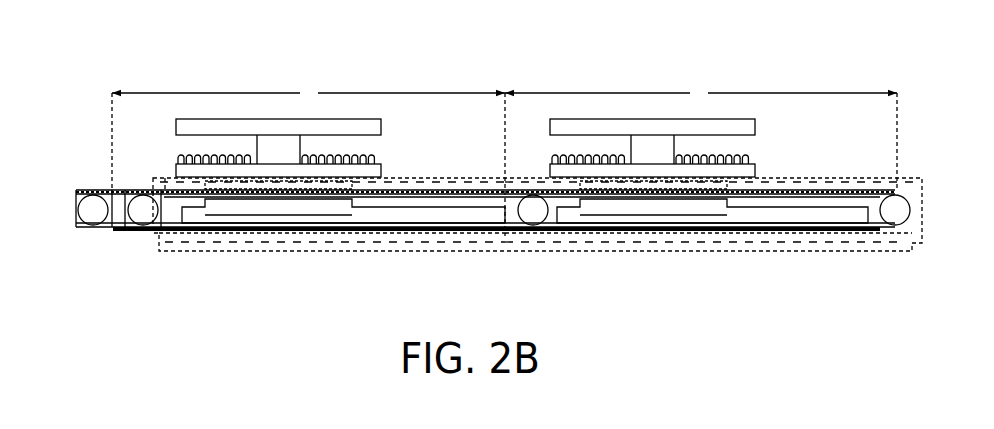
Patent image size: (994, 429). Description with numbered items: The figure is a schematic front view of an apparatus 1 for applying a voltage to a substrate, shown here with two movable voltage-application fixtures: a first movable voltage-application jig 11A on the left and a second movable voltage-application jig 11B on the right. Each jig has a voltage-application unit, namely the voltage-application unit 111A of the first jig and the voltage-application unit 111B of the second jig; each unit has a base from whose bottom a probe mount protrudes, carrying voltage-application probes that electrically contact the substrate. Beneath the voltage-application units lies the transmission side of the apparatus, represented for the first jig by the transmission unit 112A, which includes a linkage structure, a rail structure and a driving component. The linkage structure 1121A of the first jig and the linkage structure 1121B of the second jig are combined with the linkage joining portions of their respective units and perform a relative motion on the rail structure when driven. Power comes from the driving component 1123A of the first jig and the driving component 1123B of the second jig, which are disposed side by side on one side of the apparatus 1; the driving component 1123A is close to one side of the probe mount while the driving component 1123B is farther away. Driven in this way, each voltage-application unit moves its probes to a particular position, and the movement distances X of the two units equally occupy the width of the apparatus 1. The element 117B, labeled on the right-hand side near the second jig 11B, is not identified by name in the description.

The apparatus for applying a voltage to a substrate 1 is at (127, 50).
The first movable voltage-application jig 11A is at (264, 144).
The second movable voltage-application jig 11B is at (711, 147).
The voltage-application unit 111A is at (163, 131).
The voltage-application unit 111B is at (760, 131).
The transmission unit 112A is at (137, 185).
The second flexible substrate 117B is at (780, 184).
The linkage structure 1121A is at (390, 246).
The linkage structure 1121B is at (785, 247).
The driving component 1123A is at (144, 214).
The driving component 1123B is at (93, 213).